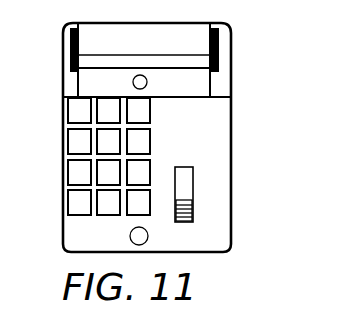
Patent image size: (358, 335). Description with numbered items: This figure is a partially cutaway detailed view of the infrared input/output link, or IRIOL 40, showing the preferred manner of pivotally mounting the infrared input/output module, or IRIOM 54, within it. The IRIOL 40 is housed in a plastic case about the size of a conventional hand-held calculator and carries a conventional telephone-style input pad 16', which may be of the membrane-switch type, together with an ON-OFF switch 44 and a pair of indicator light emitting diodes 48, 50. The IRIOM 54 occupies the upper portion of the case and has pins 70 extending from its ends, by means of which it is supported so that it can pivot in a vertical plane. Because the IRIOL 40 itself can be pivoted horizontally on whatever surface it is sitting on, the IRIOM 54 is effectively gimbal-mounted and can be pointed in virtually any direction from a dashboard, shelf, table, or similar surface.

The IR input/output link 40 is at (270, 179).
The IR input/output module 54 is at (200, 62).
The pins 70 is at (72, 44).
The indicator light emitting diode 48 is at (145, 87).
The telephone input pad 16' is at (79, 161).
The indicator light emitting diode 50 is at (146, 242).
The ON-OFF switch 44 is at (193, 213).